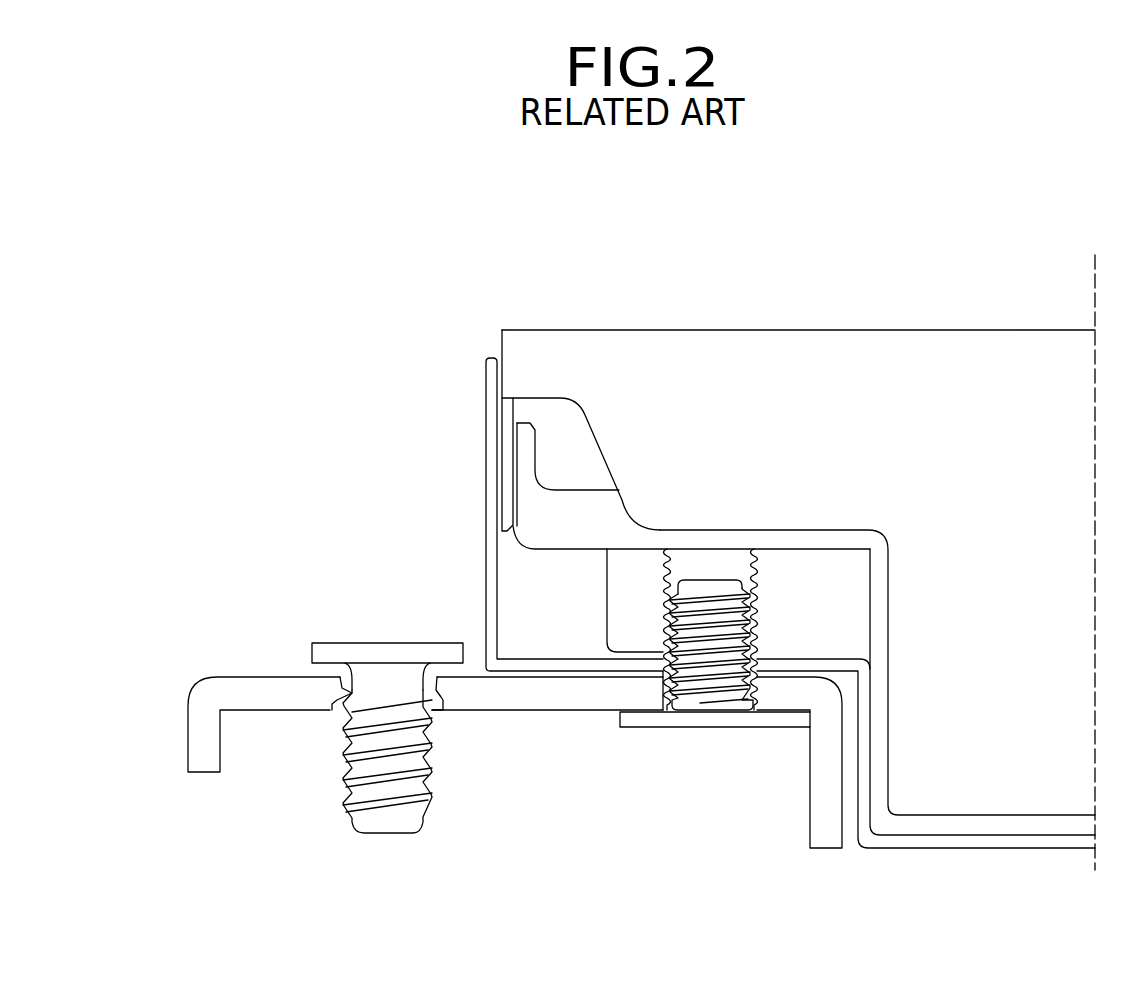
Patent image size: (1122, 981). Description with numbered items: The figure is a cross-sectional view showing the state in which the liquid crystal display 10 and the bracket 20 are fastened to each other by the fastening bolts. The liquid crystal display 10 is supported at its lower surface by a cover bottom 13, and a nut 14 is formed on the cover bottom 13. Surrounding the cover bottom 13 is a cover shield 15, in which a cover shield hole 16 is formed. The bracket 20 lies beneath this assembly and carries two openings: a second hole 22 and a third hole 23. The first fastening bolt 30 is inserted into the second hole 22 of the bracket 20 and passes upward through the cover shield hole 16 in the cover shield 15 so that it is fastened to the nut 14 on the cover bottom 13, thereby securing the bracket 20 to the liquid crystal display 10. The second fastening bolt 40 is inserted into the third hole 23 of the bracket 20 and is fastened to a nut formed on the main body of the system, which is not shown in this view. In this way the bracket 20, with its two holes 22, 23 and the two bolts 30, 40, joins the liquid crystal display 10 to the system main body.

The liquid crystal display 10 is at (495, 334).
The cover bottom 13 is at (837, 538).
The nut 14 is at (797, 613).
The cover shield 15 is at (486, 503).
The cover shield hole 16 is at (663, 662).
The bracket 20 is at (175, 733).
The second hole 22 is at (757, 690).
The third hole 23 is at (437, 717).
The first fastening bolt 30 is at (696, 746).
The second fastening bolt 40 is at (408, 679).